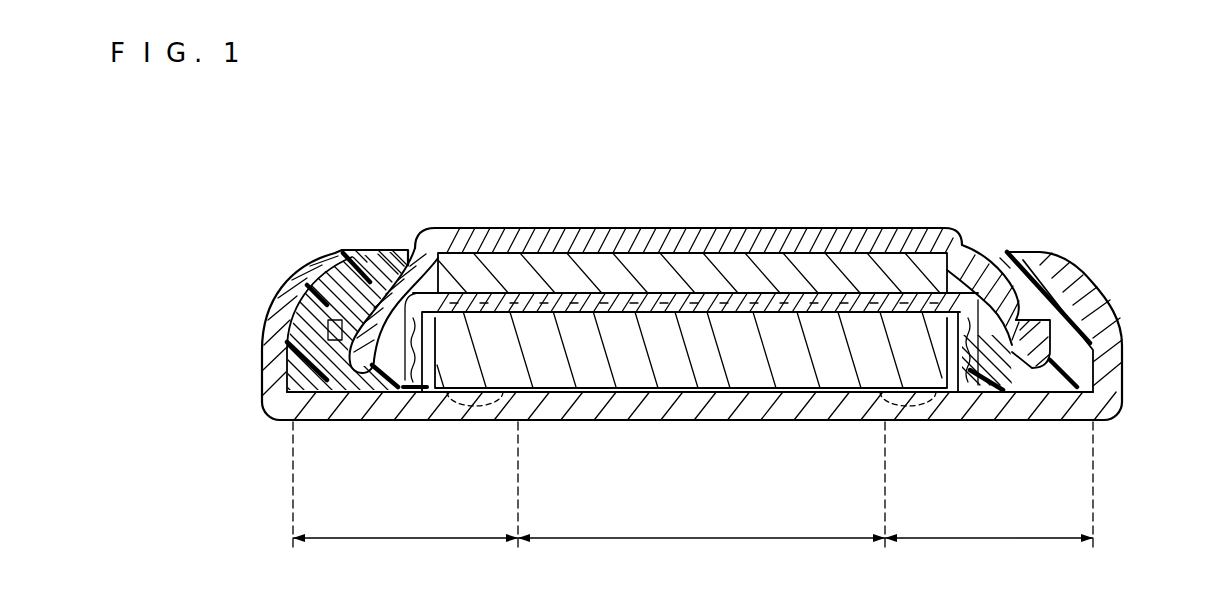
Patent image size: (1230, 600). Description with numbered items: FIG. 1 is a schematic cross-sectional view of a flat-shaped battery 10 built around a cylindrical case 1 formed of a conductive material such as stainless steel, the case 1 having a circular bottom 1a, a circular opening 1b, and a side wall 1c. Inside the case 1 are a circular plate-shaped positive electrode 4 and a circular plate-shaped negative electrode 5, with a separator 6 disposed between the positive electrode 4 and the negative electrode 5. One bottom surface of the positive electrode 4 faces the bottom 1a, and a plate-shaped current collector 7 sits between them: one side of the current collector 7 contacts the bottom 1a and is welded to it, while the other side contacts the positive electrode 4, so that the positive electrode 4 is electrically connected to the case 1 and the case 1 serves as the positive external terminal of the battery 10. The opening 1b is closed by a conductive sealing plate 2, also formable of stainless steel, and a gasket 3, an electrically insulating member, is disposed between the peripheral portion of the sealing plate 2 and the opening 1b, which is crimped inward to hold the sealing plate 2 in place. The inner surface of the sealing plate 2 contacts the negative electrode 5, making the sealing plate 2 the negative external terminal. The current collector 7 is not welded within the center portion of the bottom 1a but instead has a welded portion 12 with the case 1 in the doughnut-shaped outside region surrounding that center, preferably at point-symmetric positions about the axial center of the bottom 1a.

The flat-shaped battery 10 is at (1056, 83).
The case 1 is at (736, 430).
The bottom 1a is at (992, 406).
The opening 1b is at (985, 250).
The side wall 1c is at (1125, 340).
The sealing plate 2 is at (596, 232).
The gasket 3 is at (365, 258).
The positive electrode 4 is at (840, 340).
The negative electrode 5 is at (682, 268).
The separator 6 is at (745, 300).
The current collector 7 is at (650, 398).
The welded portion 12 is at (450, 406).